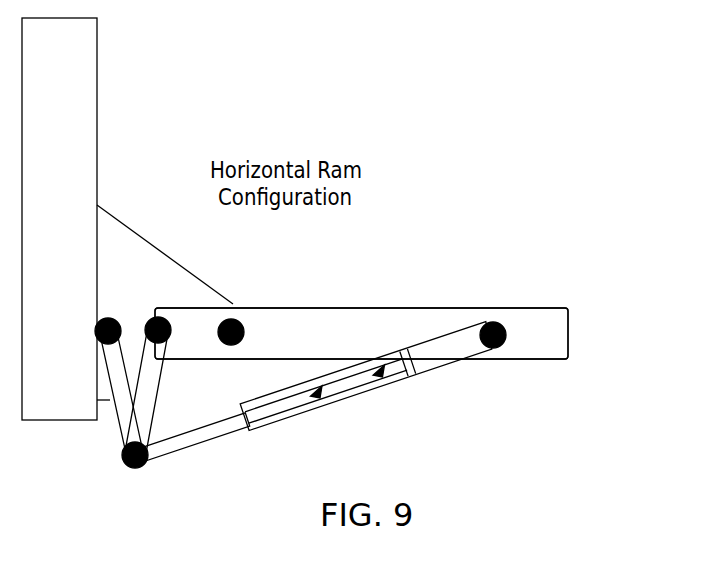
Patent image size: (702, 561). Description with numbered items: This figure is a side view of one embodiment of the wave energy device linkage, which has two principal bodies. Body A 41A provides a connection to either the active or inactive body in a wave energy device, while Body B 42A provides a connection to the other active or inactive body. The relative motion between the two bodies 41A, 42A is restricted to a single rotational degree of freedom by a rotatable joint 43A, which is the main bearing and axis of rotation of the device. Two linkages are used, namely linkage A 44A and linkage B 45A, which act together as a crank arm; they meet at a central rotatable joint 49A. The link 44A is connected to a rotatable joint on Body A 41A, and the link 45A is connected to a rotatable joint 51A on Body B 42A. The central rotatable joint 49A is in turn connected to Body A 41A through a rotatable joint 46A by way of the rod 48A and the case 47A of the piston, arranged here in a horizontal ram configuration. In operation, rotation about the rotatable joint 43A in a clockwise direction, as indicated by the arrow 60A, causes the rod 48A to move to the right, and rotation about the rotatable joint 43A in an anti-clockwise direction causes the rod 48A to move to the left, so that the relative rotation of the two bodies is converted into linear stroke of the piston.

The Body A 41A is at (570, 338).
The Body B 42A is at (59, 219).
The rotatable joint 43A is at (232, 318).
The linkage A 44A is at (153, 402).
The linkage B 45A is at (115, 412).
The rotatable joint 46A is at (497, 322).
The case 47A is at (430, 372).
The rod 48A is at (220, 443).
The central rotatable joint 49A is at (126, 470).
The rotatable joint 51A is at (110, 318).
The arrow 60A is at (160, 318).